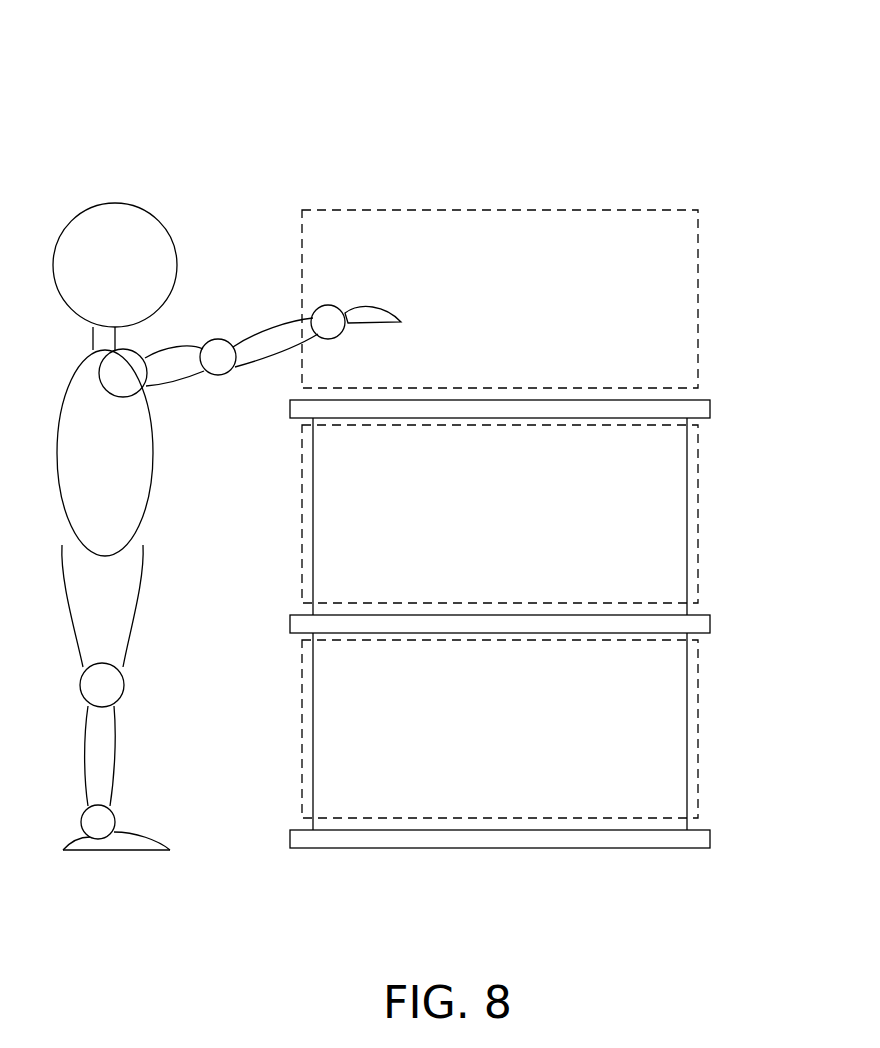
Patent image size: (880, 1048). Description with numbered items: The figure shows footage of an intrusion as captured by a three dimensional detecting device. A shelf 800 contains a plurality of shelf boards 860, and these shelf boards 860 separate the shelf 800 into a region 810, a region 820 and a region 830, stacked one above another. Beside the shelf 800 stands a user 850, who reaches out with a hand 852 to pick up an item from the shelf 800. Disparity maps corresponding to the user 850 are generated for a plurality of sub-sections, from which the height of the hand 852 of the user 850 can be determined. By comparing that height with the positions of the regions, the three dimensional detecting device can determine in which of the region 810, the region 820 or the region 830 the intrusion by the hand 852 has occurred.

The shelf 800 is at (697, 76).
The region 810 is at (698, 290).
The region 820 is at (698, 505).
The region 830 is at (698, 720).
The user 850 is at (96, 203).
The hand 852 is at (370, 303).
The shelf boards 860 is at (706, 408).